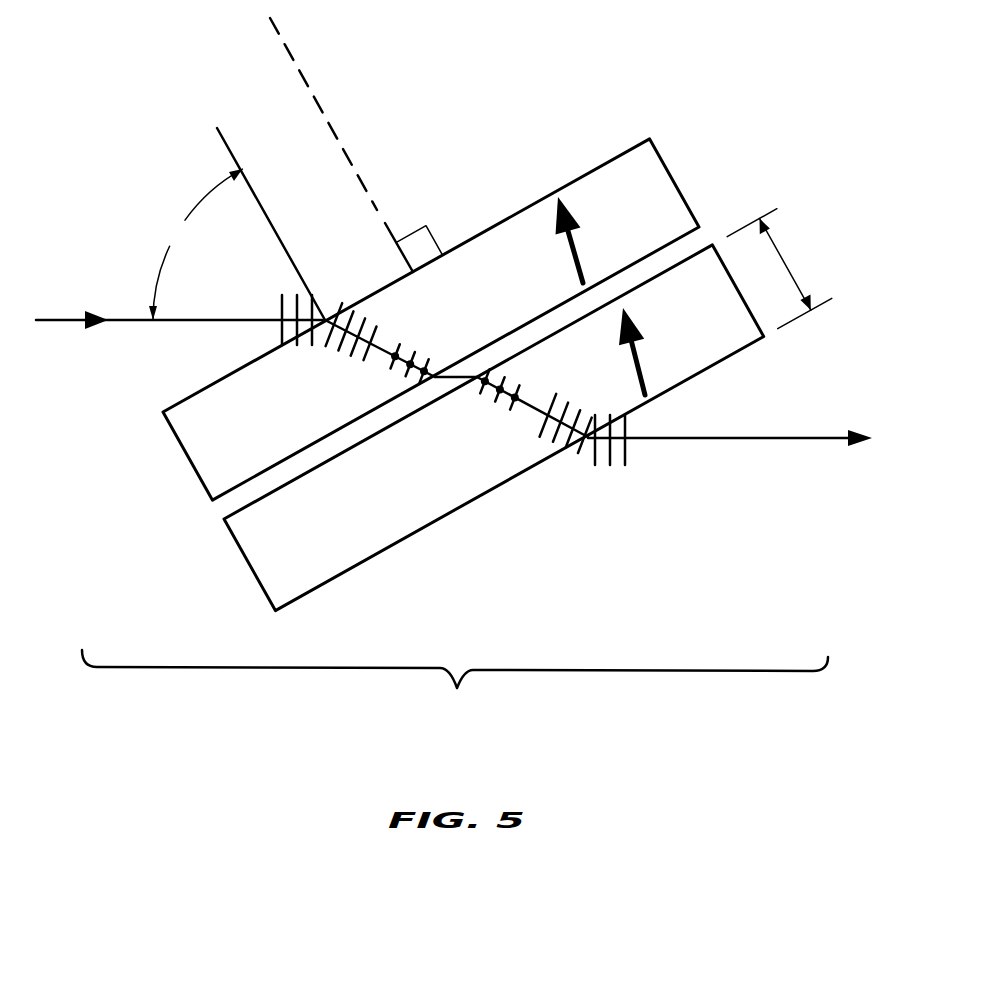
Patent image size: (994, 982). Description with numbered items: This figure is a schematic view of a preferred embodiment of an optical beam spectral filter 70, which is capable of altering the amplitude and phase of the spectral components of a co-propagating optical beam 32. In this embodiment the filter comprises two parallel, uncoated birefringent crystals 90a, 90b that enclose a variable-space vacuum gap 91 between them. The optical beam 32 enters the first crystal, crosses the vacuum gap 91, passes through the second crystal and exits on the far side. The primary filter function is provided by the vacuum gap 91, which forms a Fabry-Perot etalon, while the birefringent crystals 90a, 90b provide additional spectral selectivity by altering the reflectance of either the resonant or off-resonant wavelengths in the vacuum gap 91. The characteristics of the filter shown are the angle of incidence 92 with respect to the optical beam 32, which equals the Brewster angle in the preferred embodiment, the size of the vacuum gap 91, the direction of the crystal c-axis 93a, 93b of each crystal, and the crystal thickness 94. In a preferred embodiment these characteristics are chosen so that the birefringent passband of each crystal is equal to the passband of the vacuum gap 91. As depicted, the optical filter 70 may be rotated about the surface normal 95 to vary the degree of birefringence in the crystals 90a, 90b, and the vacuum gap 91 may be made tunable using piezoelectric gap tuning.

The co-propagating optical beam 32 is at (65, 318).
The optical beam spectral filter 70 is at (455, 685).
The birefringent crystal 90a is at (172, 443).
The birefringent crystal 90b is at (236, 550).
The variable-space vacuum gap 91 is at (218, 509).
The angle of incidence 92 is at (237, 224).
The crystal c-axis 93a is at (580, 257).
The crystal c-axis 93b is at (641, 373).
The crystal thickness 94 is at (779, 269).
The surface normal 95 is at (294, 56).